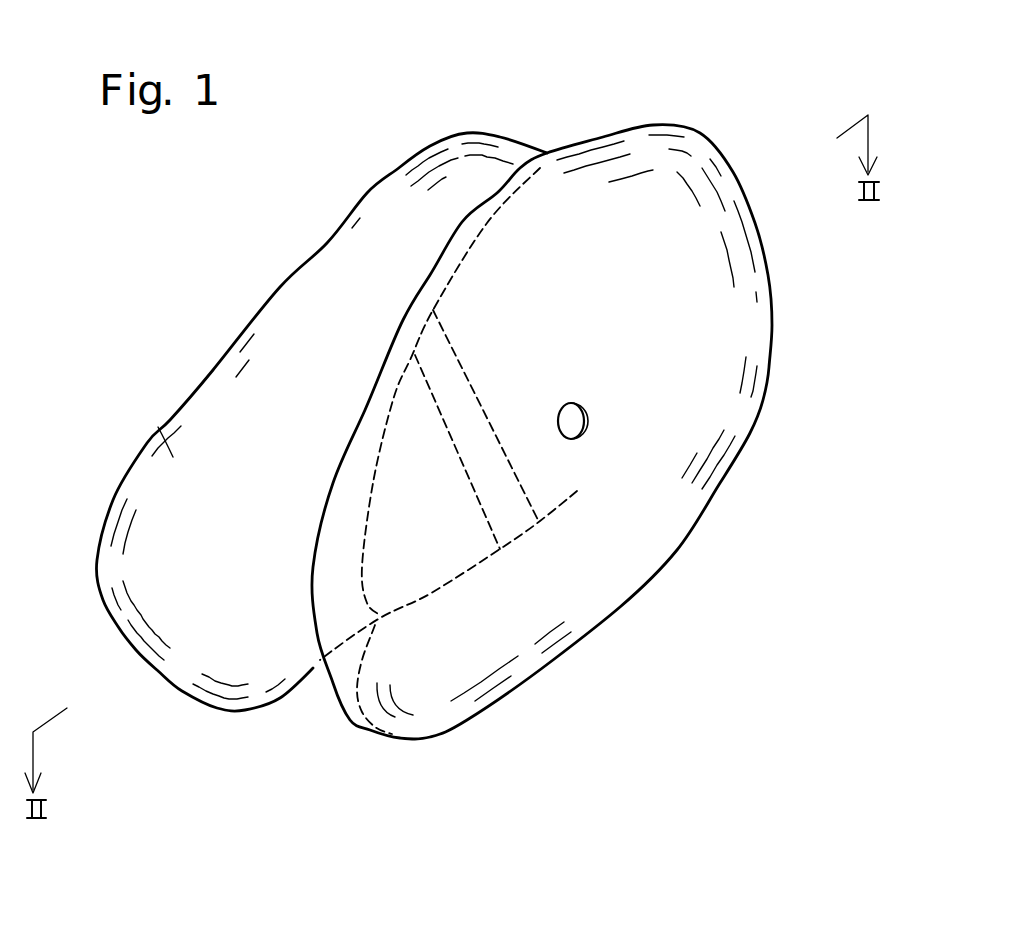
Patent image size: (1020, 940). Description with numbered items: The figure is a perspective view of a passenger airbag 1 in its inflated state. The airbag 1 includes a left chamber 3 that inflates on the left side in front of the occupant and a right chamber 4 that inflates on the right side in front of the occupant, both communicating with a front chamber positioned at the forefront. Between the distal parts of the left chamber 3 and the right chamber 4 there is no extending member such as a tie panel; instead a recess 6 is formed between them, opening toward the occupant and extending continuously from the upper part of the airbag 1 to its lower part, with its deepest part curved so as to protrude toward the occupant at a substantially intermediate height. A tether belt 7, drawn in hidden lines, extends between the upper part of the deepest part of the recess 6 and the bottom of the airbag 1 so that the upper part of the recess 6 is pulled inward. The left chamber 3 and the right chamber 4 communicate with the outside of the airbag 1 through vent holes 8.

The airbag 1 is at (608, 69).
The left chamber 3 is at (181, 430).
The right chamber 4 is at (517, 648).
The recess 6 is at (287, 620).
The tether belt 7 is at (473, 387).
The vent holes 8 is at (578, 421).